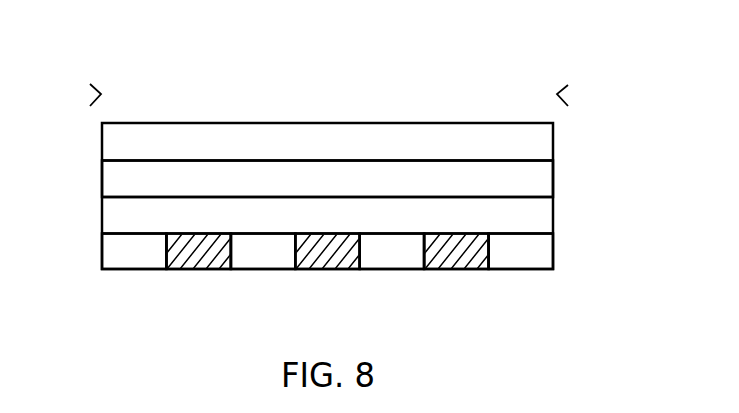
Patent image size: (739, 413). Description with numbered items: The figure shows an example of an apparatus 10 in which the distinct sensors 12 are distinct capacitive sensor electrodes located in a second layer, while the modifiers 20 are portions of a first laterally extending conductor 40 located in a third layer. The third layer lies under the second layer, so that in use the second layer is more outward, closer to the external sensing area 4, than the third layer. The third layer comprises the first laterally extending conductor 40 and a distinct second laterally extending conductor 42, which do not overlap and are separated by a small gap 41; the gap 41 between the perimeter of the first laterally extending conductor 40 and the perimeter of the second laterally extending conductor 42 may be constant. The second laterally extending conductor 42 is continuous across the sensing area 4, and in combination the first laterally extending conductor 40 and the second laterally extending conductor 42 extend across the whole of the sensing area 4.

The external sensing area 4 is at (96, 91).
The apparatus 10 is at (645, 133).
The distinct sensors 12 is at (113, 178).
The modifiers 20 is at (327, 251).
The first laterally extending conductor 40 is at (326, 281).
The gap 41 is at (174, 232).
The second laterally extending conductor 42 is at (200, 269).